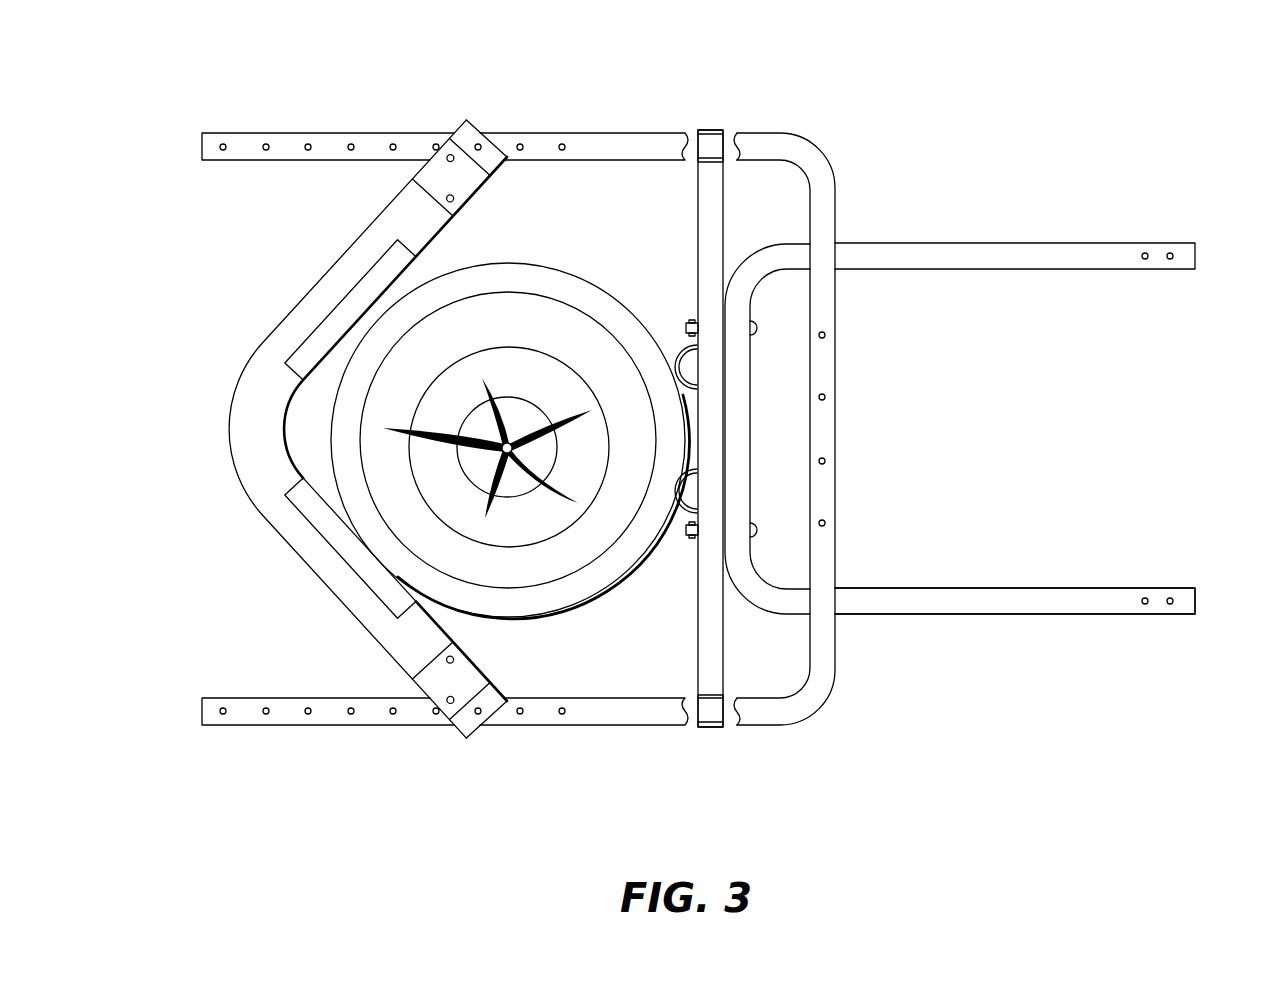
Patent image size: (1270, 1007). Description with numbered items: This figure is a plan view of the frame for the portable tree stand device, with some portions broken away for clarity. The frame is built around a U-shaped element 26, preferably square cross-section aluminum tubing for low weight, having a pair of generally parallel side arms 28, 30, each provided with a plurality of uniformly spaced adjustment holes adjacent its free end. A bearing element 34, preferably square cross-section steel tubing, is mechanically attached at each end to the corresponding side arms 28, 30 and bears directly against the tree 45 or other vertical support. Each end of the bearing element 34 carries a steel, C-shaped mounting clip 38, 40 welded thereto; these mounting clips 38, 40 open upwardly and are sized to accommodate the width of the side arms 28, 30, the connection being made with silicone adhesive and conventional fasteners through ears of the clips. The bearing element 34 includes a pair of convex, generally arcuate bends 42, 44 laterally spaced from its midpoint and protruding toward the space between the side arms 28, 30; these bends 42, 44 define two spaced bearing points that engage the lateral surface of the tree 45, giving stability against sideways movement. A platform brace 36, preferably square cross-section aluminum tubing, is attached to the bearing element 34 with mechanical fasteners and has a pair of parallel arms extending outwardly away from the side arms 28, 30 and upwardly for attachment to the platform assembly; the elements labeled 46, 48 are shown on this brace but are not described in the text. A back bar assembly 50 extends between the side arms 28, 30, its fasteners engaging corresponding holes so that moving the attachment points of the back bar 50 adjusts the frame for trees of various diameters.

The U-shaped element 26 is at (778, 712).
The side arm 28 is at (240, 714).
The side arm 30 is at (245, 150).
The bearing element 34 is at (708, 640).
The platform brace 36 is at (940, 605).
The mounting clip 38 is at (712, 728).
The mounting clip 40 is at (712, 128).
The arcuate bend 42 is at (685, 515).
The arcuate bend 44 is at (688, 347).
The tree 45 is at (577, 587).
The lower extension arm 46 is at (1085, 605).
The upper extension arm 48 is at (1089, 253).
The back bar assembly 50 is at (260, 437).